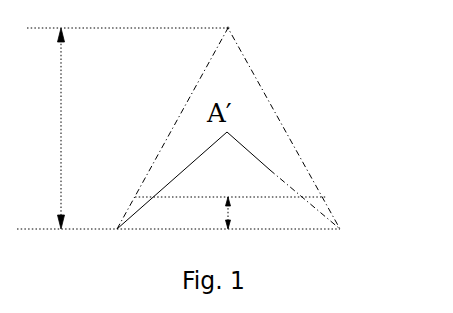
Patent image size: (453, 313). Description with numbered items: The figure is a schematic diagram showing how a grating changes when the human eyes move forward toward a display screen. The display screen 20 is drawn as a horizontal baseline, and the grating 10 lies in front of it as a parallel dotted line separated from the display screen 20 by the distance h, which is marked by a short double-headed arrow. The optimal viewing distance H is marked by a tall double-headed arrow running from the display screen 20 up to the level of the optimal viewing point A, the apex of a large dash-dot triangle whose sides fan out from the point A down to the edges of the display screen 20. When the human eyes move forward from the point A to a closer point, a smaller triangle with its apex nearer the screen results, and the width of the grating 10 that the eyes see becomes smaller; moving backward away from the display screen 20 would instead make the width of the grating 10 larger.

The grating 10 is at (288, 198).
The display screen 20 is at (305, 229).
The optimal viewing distance H is at (50, 128).
The distance between the grating and the display screen h is at (239, 213).
The optimal viewing point A is at (249, 25).